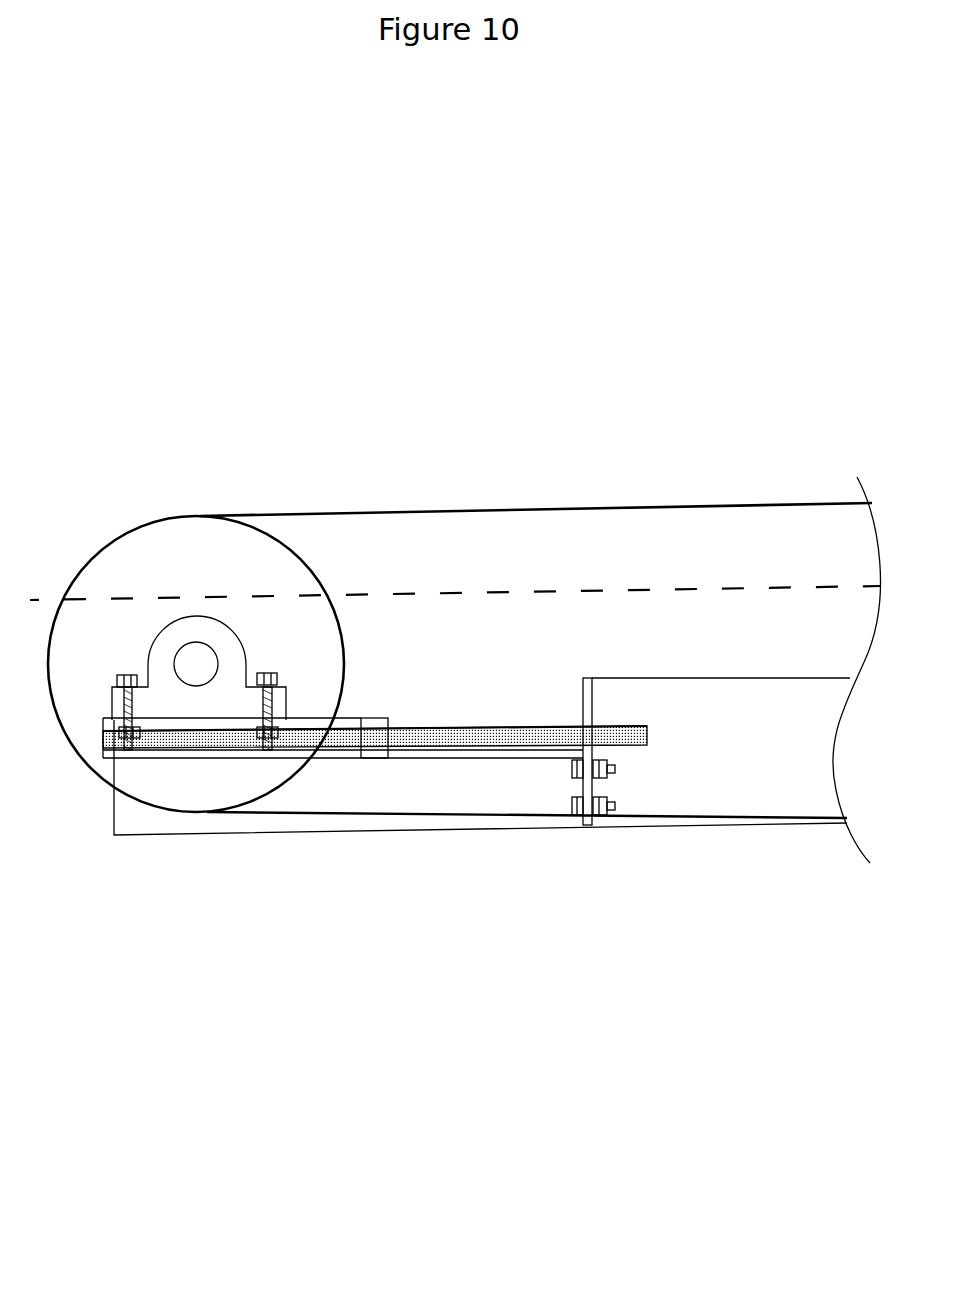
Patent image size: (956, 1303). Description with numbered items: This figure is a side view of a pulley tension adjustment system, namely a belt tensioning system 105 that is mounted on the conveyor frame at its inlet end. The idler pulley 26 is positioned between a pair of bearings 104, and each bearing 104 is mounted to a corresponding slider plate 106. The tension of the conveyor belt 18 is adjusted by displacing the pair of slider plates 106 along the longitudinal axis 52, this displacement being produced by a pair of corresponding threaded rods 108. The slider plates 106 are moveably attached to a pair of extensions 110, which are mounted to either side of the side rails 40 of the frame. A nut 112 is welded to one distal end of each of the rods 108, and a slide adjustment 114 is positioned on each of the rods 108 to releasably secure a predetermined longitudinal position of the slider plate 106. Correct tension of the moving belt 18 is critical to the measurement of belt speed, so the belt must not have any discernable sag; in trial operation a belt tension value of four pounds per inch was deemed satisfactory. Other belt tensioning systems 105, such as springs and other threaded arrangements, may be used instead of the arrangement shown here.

The conveyor belt 18 is at (388, 506).
The idler pulley 26 is at (183, 563).
The side rail 40 is at (633, 712).
The longitudinal axis 52 is at (730, 587).
The bearing 104 is at (193, 703).
The belt tensioning system 105 is at (260, 999).
The slider plate 106 is at (367, 713).
The threaded rod 108 is at (456, 720).
The extension 110 is at (522, 780).
The nut 112 is at (101, 731).
The slide adjustment 114 is at (376, 732).